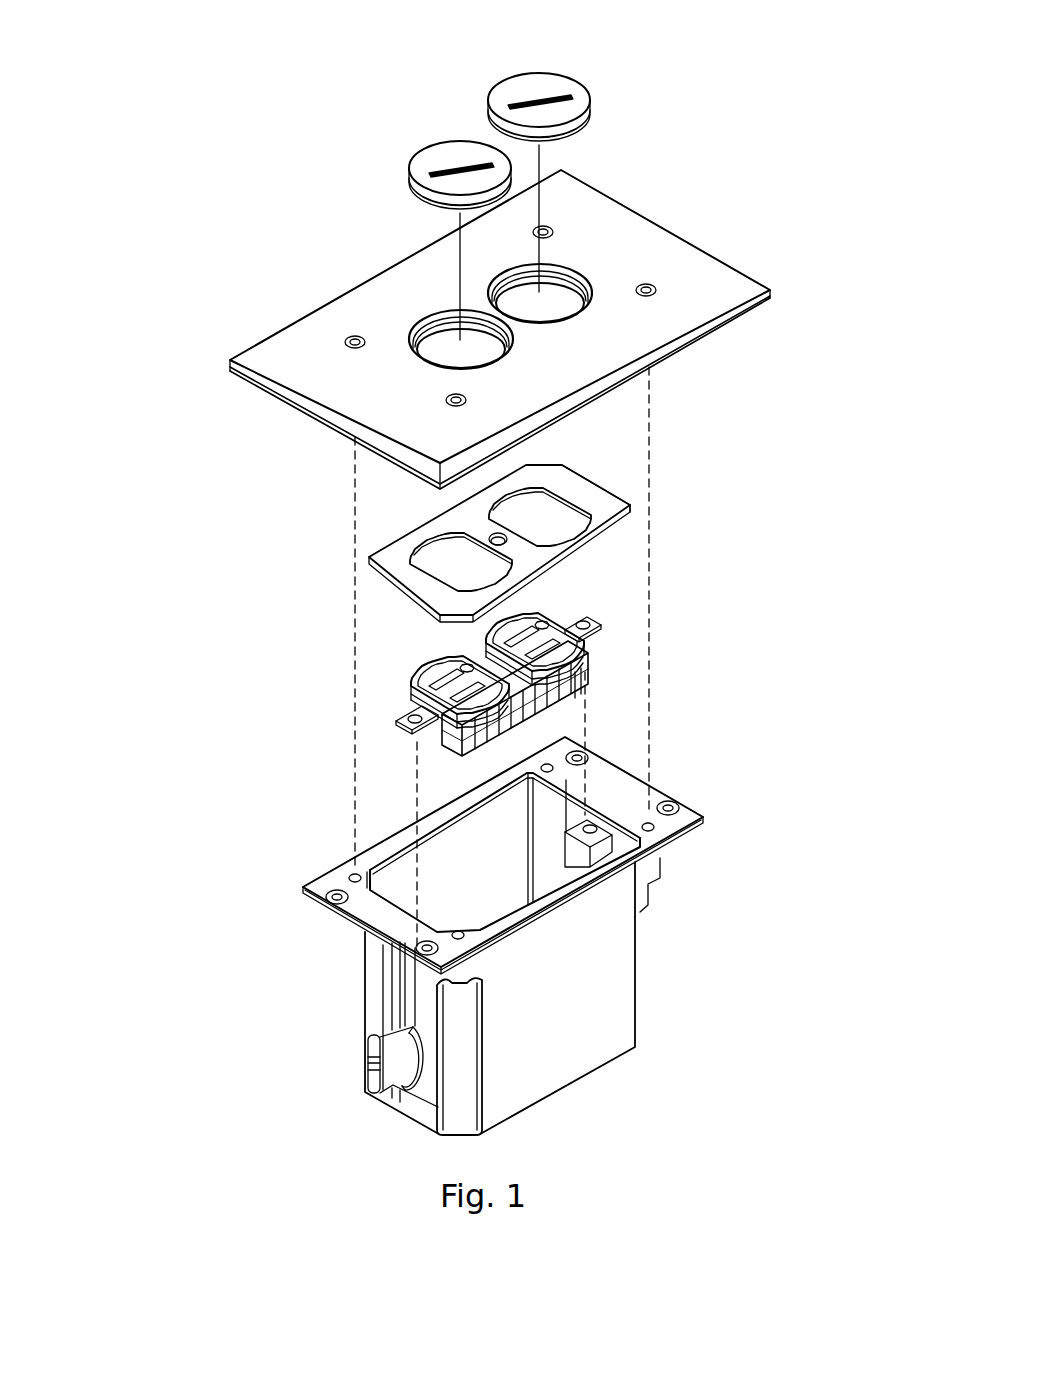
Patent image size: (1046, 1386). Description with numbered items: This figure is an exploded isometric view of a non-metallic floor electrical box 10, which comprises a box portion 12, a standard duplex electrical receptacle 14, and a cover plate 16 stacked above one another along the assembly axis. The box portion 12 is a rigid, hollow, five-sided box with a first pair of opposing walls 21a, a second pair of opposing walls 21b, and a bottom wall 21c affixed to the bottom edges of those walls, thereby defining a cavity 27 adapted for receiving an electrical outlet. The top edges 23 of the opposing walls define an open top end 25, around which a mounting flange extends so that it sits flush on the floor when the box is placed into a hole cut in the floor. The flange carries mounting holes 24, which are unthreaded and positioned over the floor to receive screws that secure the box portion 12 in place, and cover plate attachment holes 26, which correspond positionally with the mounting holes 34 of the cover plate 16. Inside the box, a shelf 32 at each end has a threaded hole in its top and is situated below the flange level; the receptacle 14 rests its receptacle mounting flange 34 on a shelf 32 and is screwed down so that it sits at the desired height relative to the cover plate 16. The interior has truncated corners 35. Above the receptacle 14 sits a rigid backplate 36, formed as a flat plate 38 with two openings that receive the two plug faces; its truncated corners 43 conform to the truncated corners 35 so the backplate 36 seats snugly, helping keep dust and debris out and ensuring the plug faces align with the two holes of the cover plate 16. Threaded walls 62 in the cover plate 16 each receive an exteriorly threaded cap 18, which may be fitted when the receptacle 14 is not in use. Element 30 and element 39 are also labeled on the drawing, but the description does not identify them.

The non-metallic floor electrical box 10 is at (205, 163).
The box portion 12 is at (618, 1032).
The standard duplex electrical receptacle 14 is at (572, 655).
The cover plate 16 is at (712, 284).
The cap 18 is at (583, 83).
The first pair of opposing walls 21a is at (575, 1008).
The second pair of opposing walls 21b is at (382, 990).
The bottom wall 21c is at (553, 1097).
The top edges 23 is at (402, 893).
The mounting holes 24 is at (680, 800).
The open top end 25 is at (396, 853).
The cover plate attachment holes 26 is at (643, 828).
The cavity 27 is at (460, 927).
The mounting bracket 30 is at (420, 1067).
The shelves 32 is at (593, 832).
The mounting holes 34 is at (347, 337).
The truncated corners 35 is at (493, 892).
The backplate 36 is at (597, 483).
The flat plate 38 is at (462, 566).
The receptacle body 39 is at (590, 690).
The truncated corners 43 is at (631, 511).
The threaded walls 62 is at (558, 267).